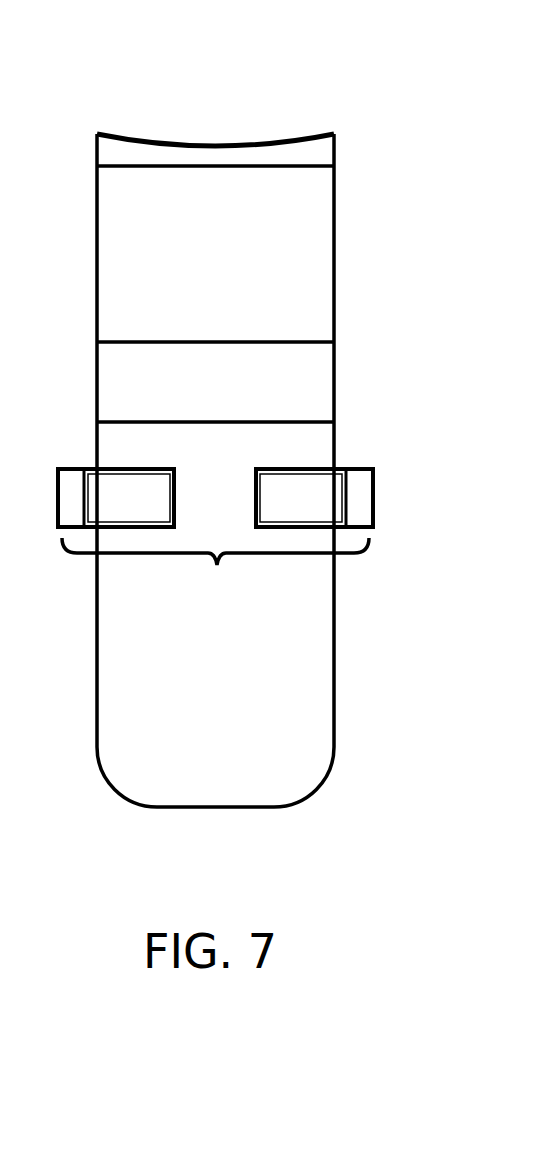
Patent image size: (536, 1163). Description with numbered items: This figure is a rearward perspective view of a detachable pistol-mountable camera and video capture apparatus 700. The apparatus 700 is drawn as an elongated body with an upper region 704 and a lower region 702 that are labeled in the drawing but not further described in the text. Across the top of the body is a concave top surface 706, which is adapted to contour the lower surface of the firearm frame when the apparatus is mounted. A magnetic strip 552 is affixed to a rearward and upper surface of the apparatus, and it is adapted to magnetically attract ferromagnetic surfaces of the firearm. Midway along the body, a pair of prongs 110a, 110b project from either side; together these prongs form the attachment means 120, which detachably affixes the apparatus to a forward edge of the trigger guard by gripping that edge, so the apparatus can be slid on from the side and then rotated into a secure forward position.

The detachable pistol-mountable camera and video capture apparatus 700 is at (90, 88).
The upper housing portion 704 is at (195, 279).
The lower housing portion 702 is at (195, 741).
The magnetic strip 552 is at (155, 143).
The top surface 706 is at (288, 142).
The prong 110a is at (314, 498).
The prong 110b is at (116, 498).
The attachment means 120 is at (217, 565).